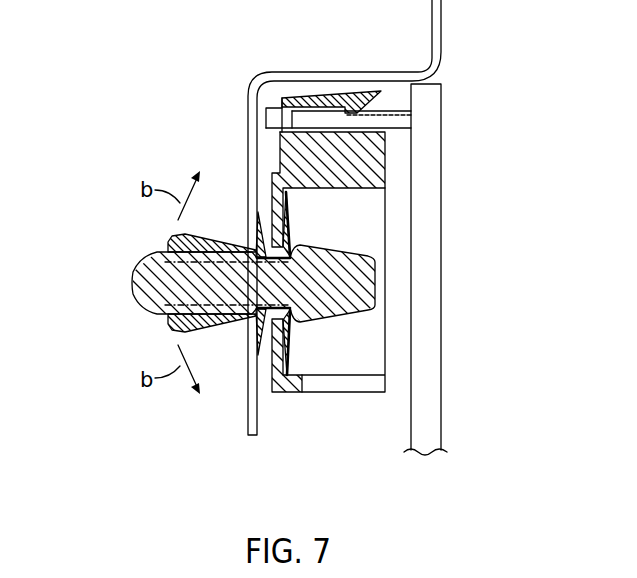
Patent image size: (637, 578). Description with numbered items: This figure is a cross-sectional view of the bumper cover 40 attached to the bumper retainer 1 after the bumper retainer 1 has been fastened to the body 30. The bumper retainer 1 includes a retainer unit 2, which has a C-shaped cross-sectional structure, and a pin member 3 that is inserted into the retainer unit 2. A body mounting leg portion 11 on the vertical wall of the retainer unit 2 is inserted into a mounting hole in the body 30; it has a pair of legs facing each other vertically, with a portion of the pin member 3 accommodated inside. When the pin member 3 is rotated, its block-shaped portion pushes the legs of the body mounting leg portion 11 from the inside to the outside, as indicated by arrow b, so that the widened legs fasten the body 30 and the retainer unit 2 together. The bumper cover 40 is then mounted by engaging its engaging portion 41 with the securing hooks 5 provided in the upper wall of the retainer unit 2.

The bumper retainer 1 is at (122, 281).
The body mounting leg portion 11 is at (170, 246).
The retainer unit 2 is at (395, 168).
The pin member 3 is at (318, 336).
The securing hook 5 is at (358, 104).
The body 30 is at (443, 10).
The bumper cover 40 is at (427, 115).
The engaging portion 41 is at (320, 117).